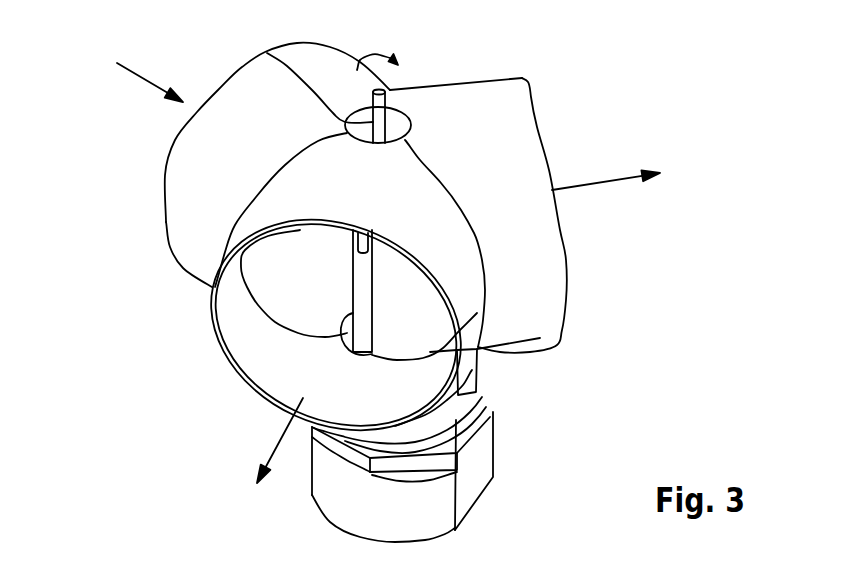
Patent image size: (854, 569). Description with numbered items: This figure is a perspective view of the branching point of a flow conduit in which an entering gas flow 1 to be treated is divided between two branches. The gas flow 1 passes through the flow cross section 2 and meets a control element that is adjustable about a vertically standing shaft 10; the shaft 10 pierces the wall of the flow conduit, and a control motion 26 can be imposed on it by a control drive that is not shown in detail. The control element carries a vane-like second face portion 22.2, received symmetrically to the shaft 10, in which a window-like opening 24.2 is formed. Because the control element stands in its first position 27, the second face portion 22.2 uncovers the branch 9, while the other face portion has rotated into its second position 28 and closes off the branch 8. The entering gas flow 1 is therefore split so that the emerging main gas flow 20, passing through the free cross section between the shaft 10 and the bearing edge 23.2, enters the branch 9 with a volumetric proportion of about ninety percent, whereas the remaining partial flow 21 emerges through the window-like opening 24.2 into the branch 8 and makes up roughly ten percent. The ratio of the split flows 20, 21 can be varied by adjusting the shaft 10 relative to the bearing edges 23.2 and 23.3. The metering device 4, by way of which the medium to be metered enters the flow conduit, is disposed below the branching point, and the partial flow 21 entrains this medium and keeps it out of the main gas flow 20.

The entering gas flow 1 is at (142, 83).
The flow cross section 2 is at (167, 215).
The metering device 4 is at (477, 485).
The branch 8 is at (537, 123).
The branch 9 is at (262, 401).
The shaft 10 is at (267, 53).
The main gas flow 20 is at (267, 437).
The partial flow 21 is at (587, 188).
The second face portion 22.2 is at (413, 333).
The bearing edge 23.2 is at (282, 330).
The bearing edge 23.3 is at (487, 297).
The window-like opening 24.2 is at (353, 245).
The control motion 26 is at (397, 78).
The first position 27 is at (260, 290).
The second position 28 is at (417, 278).